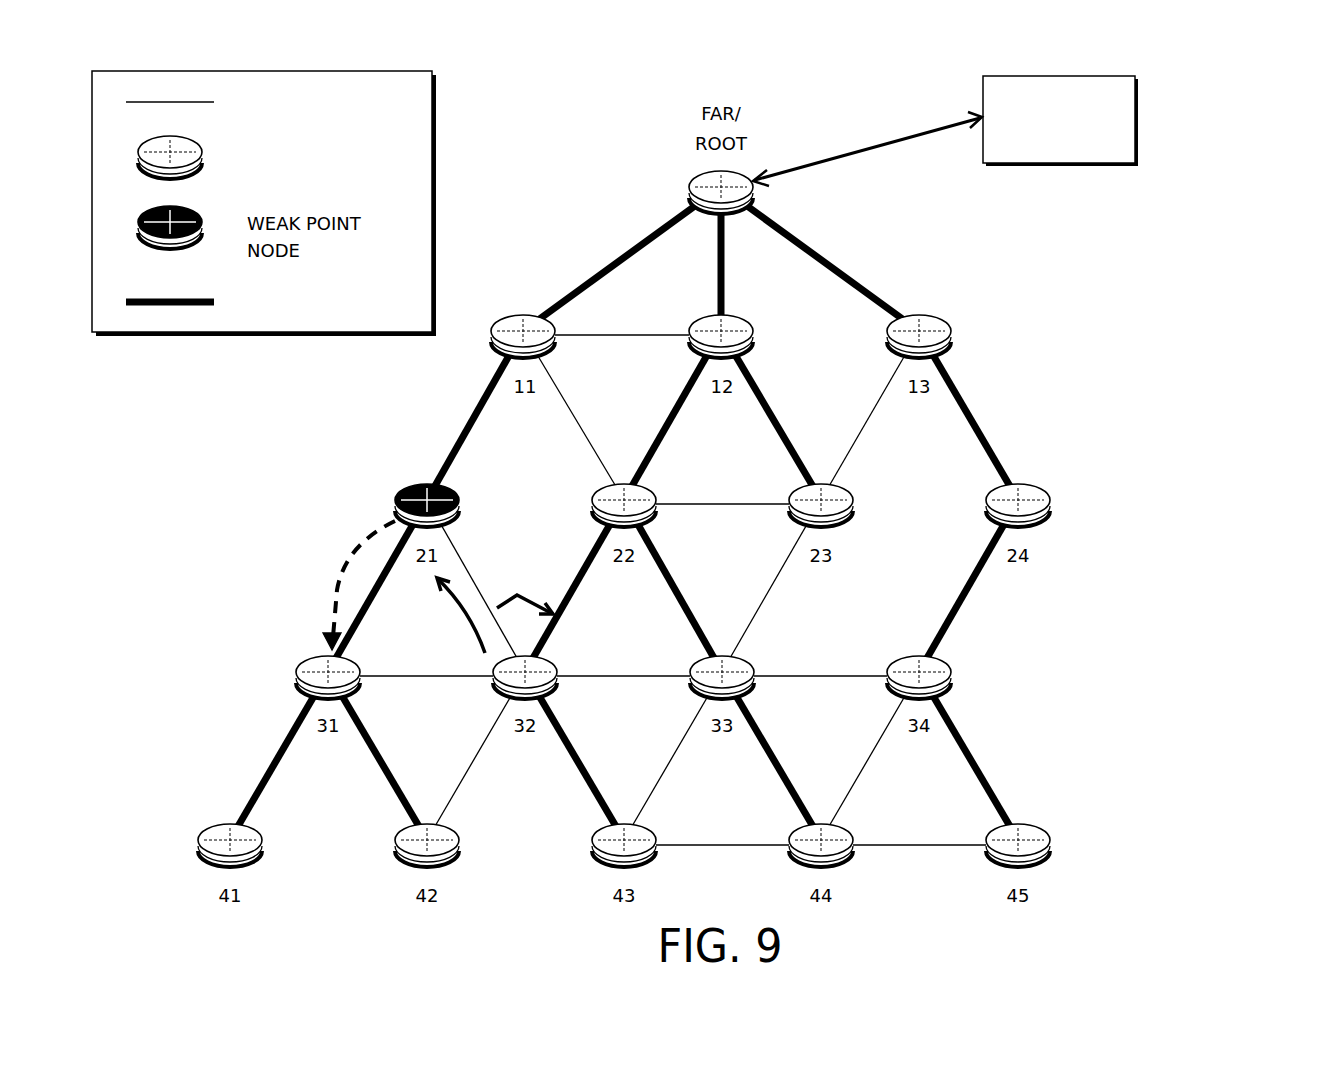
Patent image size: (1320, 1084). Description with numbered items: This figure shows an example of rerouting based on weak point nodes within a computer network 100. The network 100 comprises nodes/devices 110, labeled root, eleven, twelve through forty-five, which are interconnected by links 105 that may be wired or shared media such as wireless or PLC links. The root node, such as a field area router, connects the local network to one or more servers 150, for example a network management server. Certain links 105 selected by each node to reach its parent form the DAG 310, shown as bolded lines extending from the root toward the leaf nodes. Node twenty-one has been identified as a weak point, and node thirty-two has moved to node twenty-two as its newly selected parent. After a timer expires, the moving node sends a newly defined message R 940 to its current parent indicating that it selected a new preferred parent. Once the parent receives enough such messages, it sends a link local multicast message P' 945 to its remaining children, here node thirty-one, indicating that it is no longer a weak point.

The computer network 100 is at (1241, 131).
The links 105 is at (572, 469).
The nodes/devices 110 is at (594, 501).
The servers 150 is at (1076, 146).
The DAG 310 is at (572, 513).
The message R 940 is at (455, 632).
The link local multicast message P' 945 is at (331, 573).